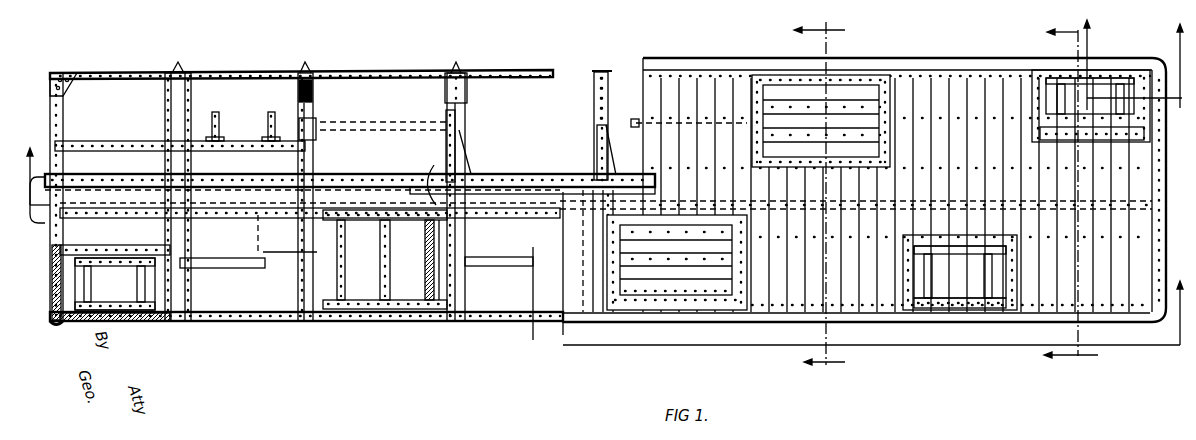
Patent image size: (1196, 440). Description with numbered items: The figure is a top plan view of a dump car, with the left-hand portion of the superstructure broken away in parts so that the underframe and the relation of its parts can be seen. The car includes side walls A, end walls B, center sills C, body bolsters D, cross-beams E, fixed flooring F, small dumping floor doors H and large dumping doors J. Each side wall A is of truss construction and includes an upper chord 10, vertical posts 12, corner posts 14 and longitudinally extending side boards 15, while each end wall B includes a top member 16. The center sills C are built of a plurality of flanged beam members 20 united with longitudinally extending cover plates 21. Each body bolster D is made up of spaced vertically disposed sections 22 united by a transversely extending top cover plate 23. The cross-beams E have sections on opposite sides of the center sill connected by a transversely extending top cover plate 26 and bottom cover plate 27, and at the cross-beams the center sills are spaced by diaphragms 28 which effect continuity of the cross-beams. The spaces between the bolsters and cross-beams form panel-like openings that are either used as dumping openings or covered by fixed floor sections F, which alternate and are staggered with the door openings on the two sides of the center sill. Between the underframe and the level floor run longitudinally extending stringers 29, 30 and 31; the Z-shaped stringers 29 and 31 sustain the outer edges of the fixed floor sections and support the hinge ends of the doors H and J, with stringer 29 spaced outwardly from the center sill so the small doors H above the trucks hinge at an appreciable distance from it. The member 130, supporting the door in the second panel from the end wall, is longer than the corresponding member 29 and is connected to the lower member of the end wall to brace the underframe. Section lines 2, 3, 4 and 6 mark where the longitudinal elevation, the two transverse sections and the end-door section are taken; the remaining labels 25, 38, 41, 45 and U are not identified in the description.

The upper chord 10 is at (853, 60).
The vertical posts 12 is at (182, 74).
The corner posts 14 is at (61, 74).
The longitudinally extending side boards 15 is at (136, 323).
The top member 16 is at (1158, 137).
The flanged beam members 20 is at (494, 175).
The longitudinally extending cover plates 21 is at (376, 190).
The vertically disposed sections 22 is at (163, 105).
The top cover plate 23 is at (193, 179).
The post channel strips 25 is at (308, 159).
The top cover plate 26 is at (320, 141).
The bottom cover plate 27 is at (469, 162).
The diaphragms 28 is at (272, 252).
The stringer 29 is at (98, 248).
The stringer 30 is at (228, 269).
The stringer 31 is at (366, 221).
The bracket 38 is at (258, 138).
The bracket 41 is at (267, 111).
The window slats 45 is at (676, 243).
The member 130 is at (82, 143).
The section line 2— 2 is at (605, 240).
The section line 3— 3 is at (813, 197).
The section line 4— 4 is at (1063, 195).
The line 6— 6 is at (1131, 56).
The side walls A is at (674, 73).
The end walls B is at (1158, 218).
The center sills C is at (334, 193).
The body bolsters D is at (186, 236).
The cross-beams E is at (315, 116).
The fixed flooring F is at (901, 195).
The small dumping floor doors H is at (612, 190).
The large dumping doors J is at (748, 192).
The frame opening U is at (397, 269).